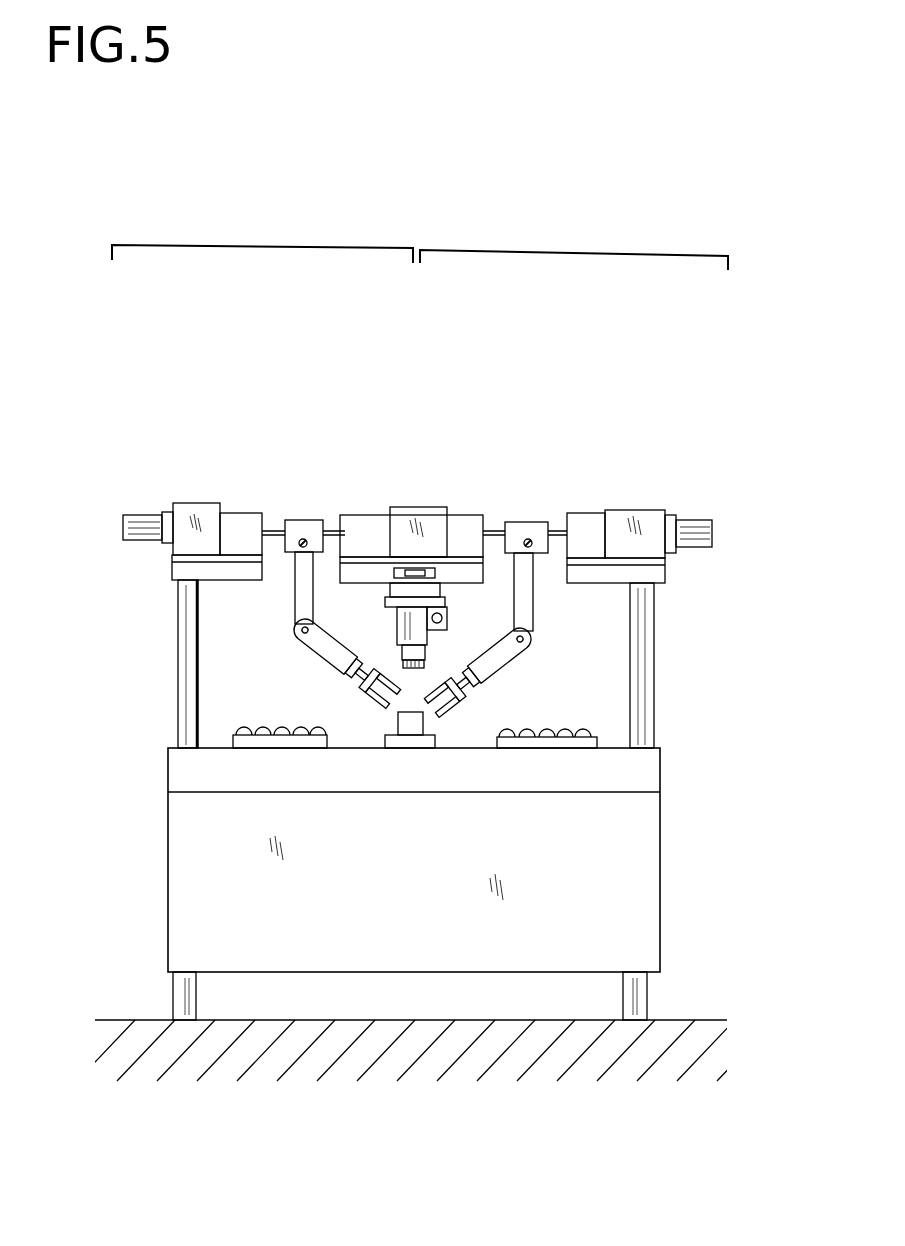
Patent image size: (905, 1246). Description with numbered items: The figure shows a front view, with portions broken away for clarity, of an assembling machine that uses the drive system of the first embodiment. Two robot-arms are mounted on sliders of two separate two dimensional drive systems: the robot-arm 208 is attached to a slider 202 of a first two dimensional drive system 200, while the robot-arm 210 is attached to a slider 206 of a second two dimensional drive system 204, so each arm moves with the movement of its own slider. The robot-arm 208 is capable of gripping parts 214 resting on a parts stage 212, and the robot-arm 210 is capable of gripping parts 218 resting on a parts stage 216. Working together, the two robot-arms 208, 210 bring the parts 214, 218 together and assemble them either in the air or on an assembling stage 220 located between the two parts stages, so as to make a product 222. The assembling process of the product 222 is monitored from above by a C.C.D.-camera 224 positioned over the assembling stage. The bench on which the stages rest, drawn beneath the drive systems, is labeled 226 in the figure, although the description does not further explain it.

The first two dimensional drive system 200 is at (545, 251).
The second two dimensional drive system 204 is at (241, 243).
The slider 202 is at (523, 522).
The slider 206 is at (303, 521).
The robot-arm 208 is at (535, 656).
The robot-arm 210 is at (312, 650).
The parts stage 212 is at (550, 742).
The parts 214 is at (545, 742).
The parts stage 216 is at (252, 742).
The parts 218 is at (248, 733).
The assembling stage 220 is at (413, 746).
The product 222 is at (408, 720).
The C.C.D.-camera 224 is at (403, 623).
The bench 226 is at (556, 780).